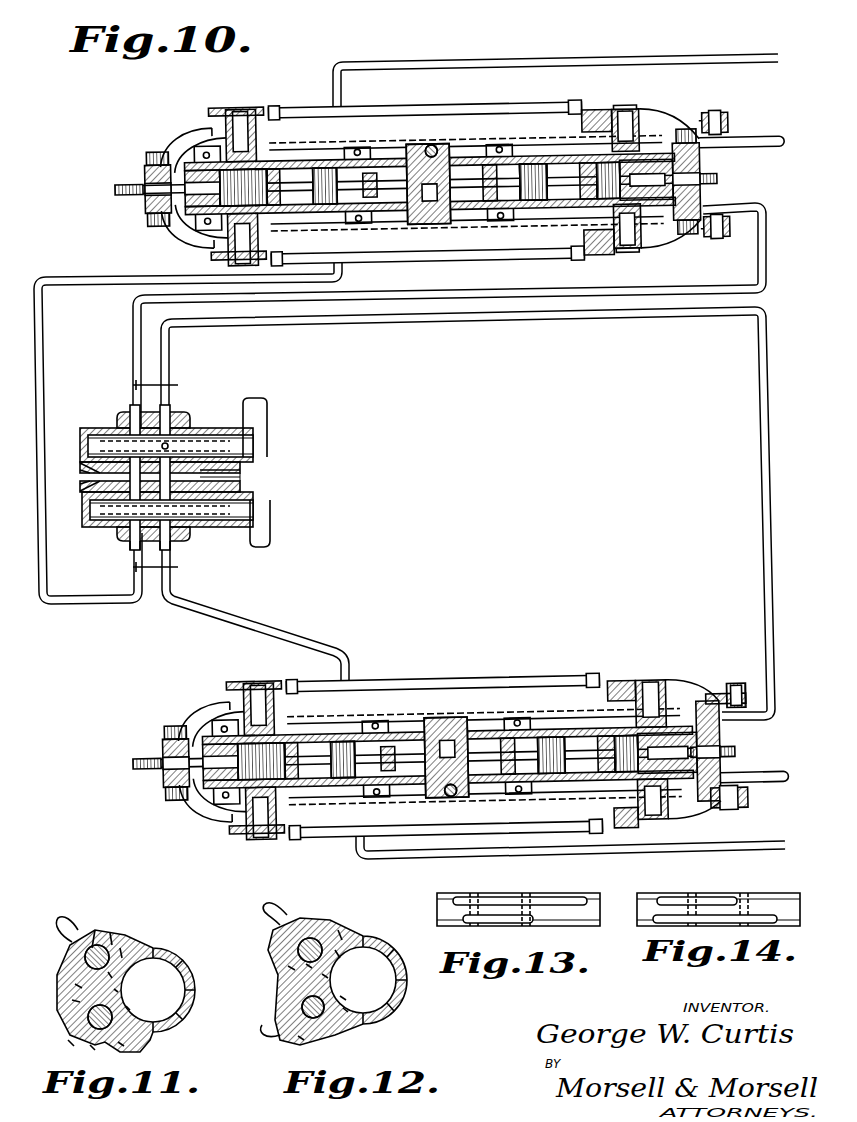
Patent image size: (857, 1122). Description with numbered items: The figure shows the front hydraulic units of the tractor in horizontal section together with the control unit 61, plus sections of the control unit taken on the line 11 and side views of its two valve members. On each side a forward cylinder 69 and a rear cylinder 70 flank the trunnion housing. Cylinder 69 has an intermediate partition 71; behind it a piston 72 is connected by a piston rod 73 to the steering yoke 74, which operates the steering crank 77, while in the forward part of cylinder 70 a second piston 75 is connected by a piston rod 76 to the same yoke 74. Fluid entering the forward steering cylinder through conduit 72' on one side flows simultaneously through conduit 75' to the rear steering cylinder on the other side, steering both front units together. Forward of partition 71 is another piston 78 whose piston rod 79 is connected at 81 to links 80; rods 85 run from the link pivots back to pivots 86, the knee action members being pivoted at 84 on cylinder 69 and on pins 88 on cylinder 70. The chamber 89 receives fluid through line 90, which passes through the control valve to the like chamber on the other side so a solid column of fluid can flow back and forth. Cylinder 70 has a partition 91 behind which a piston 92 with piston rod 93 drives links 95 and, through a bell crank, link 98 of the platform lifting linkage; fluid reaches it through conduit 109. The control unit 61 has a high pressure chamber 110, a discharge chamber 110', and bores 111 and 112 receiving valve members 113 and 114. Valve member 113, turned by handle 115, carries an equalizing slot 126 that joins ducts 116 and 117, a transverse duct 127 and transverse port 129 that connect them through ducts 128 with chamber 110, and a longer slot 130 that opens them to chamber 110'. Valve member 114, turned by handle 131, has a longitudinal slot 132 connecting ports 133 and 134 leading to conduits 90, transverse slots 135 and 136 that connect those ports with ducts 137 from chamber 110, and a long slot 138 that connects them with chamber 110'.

In FIG. 10, the section line 11— 11 is at (164, 476).
In FIG. 10, the control unit 61 is at (92, 416).
In FIG. 10, the cylinder 69 is at (276, 160).
In FIG. 10, the cylinder 70 is at (540, 164).
In FIG. 10, the intermediate partition 71 is at (278, 184).
In FIG. 10, the piston 72 is at (316, 471).
In FIG. 10, the conduit 72' is at (561, 458).
In FIG. 10, the piston rod 73 is at (395, 184).
In FIG. 10, the steering yoke 74 is at (425, 150).
In FIG. 10, the second piston 75 is at (549, 459).
In FIG. 10, the conduit 75' is at (743, 455).
In FIG. 10, the piston rod 76 is at (507, 174).
In FIG. 10, the steering crank 77 is at (478, 136).
In FIG. 10, the piston 78 is at (249, 464).
In FIG. 10, the piston rod 79 is at (181, 152).
In FIG. 10, the links 80 is at (213, 126).
In FIG. 10, the connection 81 is at (150, 155).
In FIG. 10, the pivot 84 is at (258, 693).
In FIG. 10, the rods 85 is at (436, 110).
In FIG. 10, the pivot 86 is at (605, 108).
In FIG. 10, the pins 88 is at (641, 115).
In FIG. 10, the chamber 89 is at (249, 473).
In FIG. 10, the line 90 is at (340, 244).
In FIG. 10, the intermediate partition 91 is at (578, 190).
In FIG. 10, the piston 92 is at (620, 170).
In FIG. 10, the piston rod 93 is at (645, 185).
In FIG. 10, the links 95 is at (681, 122).
In FIG. 10, the link 98 is at (735, 690).
In FIG. 10, the fluid conduit 109 is at (760, 207).
In FIG. 10, the high pressure chamber 110 is at (145, 495).
In FIG. 11, the high pressure chamber 110 is at (126, 986).
In FIG. 12, the high pressure chamber 110 is at (339, 981).
In FIG. 10, the discharge or atmospheric pressure chamber 110' is at (238, 474).
In FIG. 10, the bore 111 is at (196, 428).
In FIG. 11, the bore 111 is at (112, 932).
In FIG. 10, the bore 112 is at (108, 530).
In FIG. 11, the bore 112 is at (92, 1047).
In FIG. 10, the valve member 113 is at (232, 430).
In FIG. 11, the valve member 113 is at (75, 985).
In FIG. 12, the valve member 113 is at (308, 966).
In FIG. 13, the valve member 113 is at (565, 893).
In FIG. 10, the valve member 114 is at (240, 522).
In FIG. 11, the valve member 114 is at (72, 1000).
In FIG. 12, the valve member 114 is at (345, 1010).
In FIG. 14, the valve member 114 is at (755, 893).
In FIG. 10, the operating handle 115 is at (266, 420).
In FIG. 10, the duct 116 is at (130, 426).
In FIG. 11, the duct 116 is at (78, 925).
In FIG. 12, the duct 116 is at (295, 920).
In FIG. 10, the duct 117 is at (190, 426).
In FIG. 11, the equalizing slot 126 is at (84, 962).
In FIG. 12, the equalizing slot 126 is at (315, 938).
In FIG. 13, the equalizing slot 126 is at (490, 926).
In FIG. 10, the transverse valve duct 127 is at (165, 451).
In FIG. 11, the transverse valve duct 127 is at (110, 975).
In FIG. 12, the transverse valve duct 127 is at (290, 968).
In FIG. 13, the transverse valve duct 127 is at (470, 896).
In FIG. 10, the ducts 128 is at (86, 466).
In FIG. 11, the ducts 128 is at (122, 946).
In FIG. 12, the ducts 128 is at (348, 956).
In FIG. 10, the transverse port 129 is at (165, 454).
In FIG. 13, the transverse port 129 is at (522, 896).
In FIG. 10, the second longitudinal slot 130 is at (212, 432).
In FIG. 11, the second longitudinal slot 130 is at (96, 928).
In FIG. 12, the second longitudinal slot 130 is at (340, 935).
In FIG. 13, the second longitudinal slot 130 is at (565, 912).
In FIG. 10, the handle 131 is at (271, 530).
In FIG. 11, the longitudinal slot 132 is at (88, 1016).
In FIG. 12, the longitudinal slot 132 is at (300, 1003).
In FIG. 14, the longitudinal slot 132 is at (696, 896).
In FIG. 10, the port 133 is at (127, 542).
In FIG. 11, the port 133 is at (70, 1042).
In FIG. 12, the port 133 is at (280, 1015).
In FIG. 10, the port 134 is at (190, 530).
In FIG. 10, the transverse slot 135 is at (165, 509).
In FIG. 11, the transverse slot 135 is at (116, 990).
In FIG. 12, the transverse slot 135 is at (343, 998).
In FIG. 14, the transverse slot 135 is at (678, 896).
In FIG. 10, the transverse slot 136 is at (165, 506).
In FIG. 14, the transverse slot 136 is at (745, 893).
In FIG. 10, the ducts 137 is at (88, 485).
In FIG. 11, the ducts 137 is at (128, 1008).
In FIG. 12, the ducts 137 is at (325, 976).
In FIG. 11, the long slot 138 is at (120, 1043).
In FIG. 12, the long slot 138 is at (300, 1038).
In FIG. 14, the long slot 138 is at (692, 926).